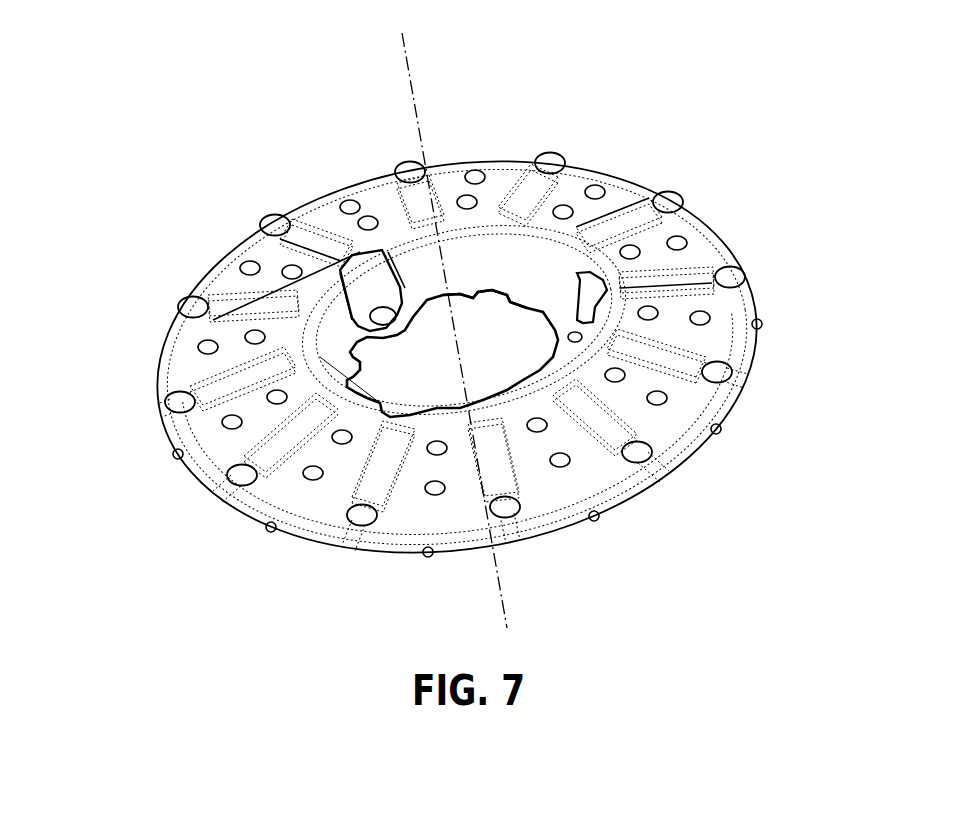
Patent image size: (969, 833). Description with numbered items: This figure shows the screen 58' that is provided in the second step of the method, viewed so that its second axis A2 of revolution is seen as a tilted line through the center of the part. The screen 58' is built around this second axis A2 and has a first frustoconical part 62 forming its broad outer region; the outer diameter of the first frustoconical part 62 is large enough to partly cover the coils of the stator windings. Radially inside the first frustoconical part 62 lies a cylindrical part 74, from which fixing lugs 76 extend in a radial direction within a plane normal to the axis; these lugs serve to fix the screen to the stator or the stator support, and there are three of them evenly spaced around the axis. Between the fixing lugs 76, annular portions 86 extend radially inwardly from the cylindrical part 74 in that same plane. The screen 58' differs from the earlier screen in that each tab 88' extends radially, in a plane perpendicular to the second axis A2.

The screen 58' is at (457, 309).
The first frustoconical part 62 is at (232, 337).
The cylindrical part 74 is at (548, 272).
The fixing lugs 76 is at (400, 310).
The annular portions 86 is at (495, 290).
The tab 88' is at (488, 188).
The second axis A2 is at (405, 52).